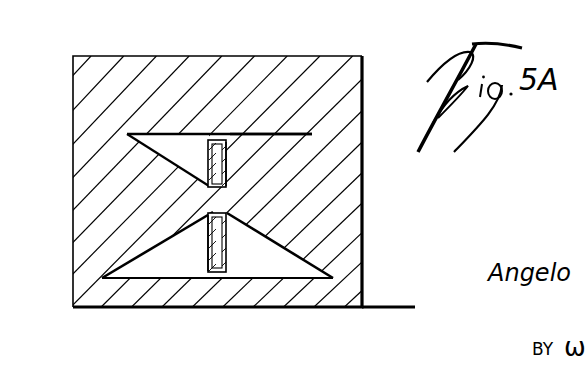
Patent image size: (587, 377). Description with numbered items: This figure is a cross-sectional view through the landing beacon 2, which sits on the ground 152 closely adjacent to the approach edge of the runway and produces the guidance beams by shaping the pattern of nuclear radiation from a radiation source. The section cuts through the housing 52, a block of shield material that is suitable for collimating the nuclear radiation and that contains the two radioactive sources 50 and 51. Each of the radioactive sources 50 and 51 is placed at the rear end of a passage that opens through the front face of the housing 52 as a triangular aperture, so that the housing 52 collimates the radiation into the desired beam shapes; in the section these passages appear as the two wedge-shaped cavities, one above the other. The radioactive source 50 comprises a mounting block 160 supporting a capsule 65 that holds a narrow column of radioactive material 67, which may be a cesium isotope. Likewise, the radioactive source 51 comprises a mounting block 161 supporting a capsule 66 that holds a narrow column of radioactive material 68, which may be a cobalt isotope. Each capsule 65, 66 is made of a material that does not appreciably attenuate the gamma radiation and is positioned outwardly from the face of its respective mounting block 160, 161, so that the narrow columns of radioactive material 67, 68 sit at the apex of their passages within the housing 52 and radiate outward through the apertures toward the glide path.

The landing beacon 2 is at (134, 32).
The radioactive source 50 is at (142, 153).
The radioactive source 51 is at (116, 261).
The housing 52 is at (310, 76).
The capsule 65 is at (226, 147).
The capsule 66 is at (207, 248).
The radioactive material 67 is at (222, 140).
The radioactive material 68 is at (217, 272).
The ground 152 is at (382, 307).
The mounting block 160 is at (270, 146).
The mounting block 161 is at (267, 262).